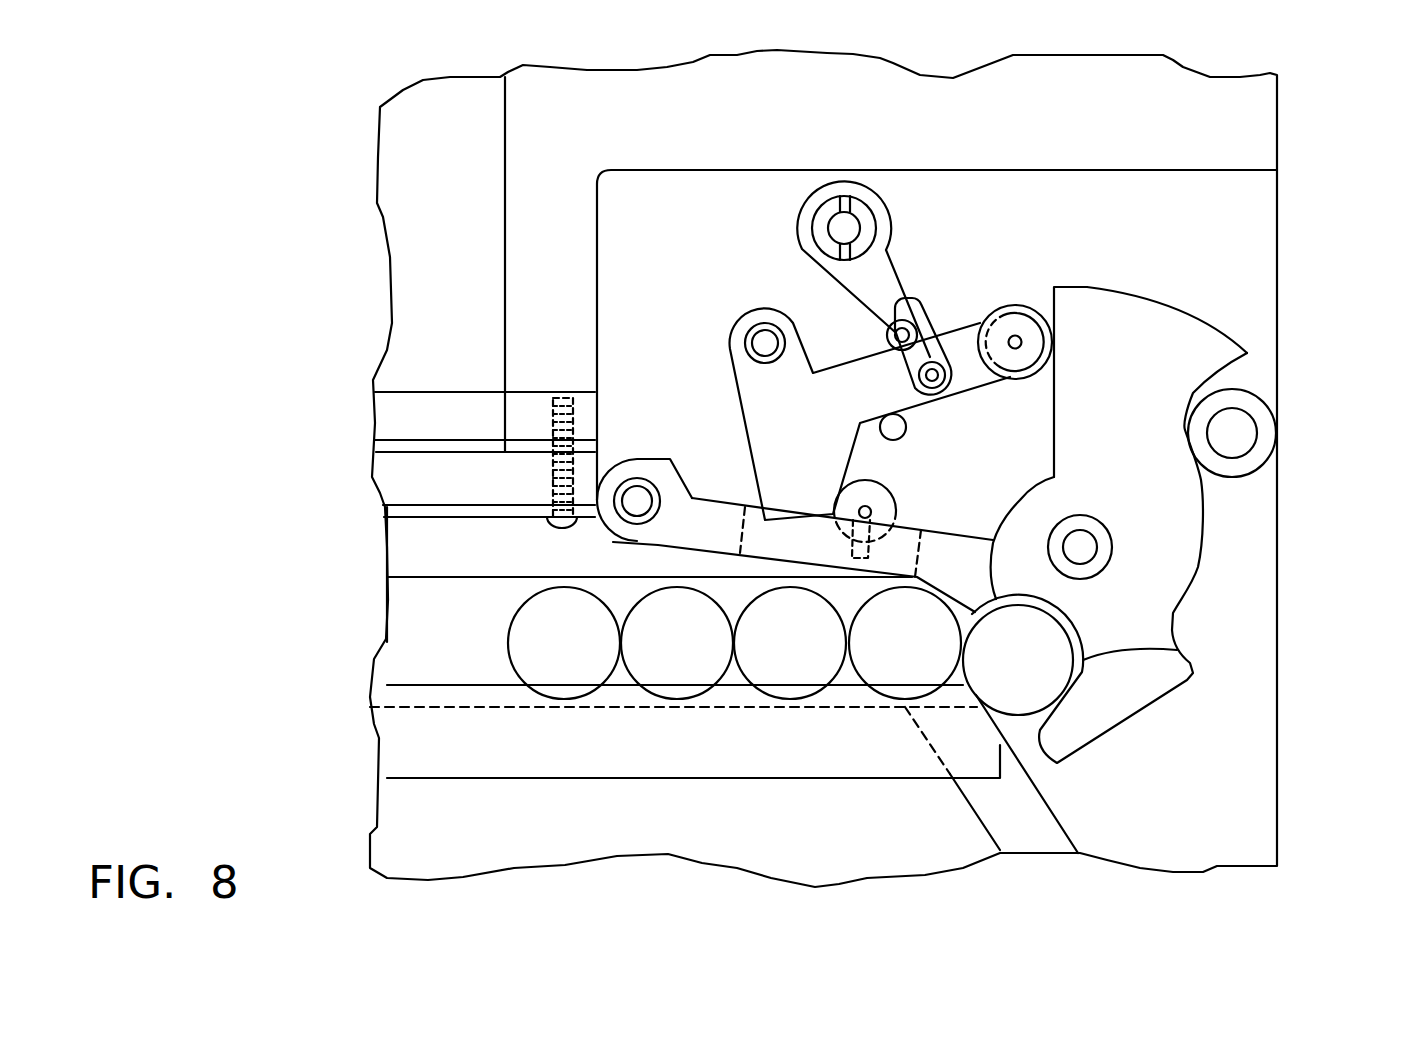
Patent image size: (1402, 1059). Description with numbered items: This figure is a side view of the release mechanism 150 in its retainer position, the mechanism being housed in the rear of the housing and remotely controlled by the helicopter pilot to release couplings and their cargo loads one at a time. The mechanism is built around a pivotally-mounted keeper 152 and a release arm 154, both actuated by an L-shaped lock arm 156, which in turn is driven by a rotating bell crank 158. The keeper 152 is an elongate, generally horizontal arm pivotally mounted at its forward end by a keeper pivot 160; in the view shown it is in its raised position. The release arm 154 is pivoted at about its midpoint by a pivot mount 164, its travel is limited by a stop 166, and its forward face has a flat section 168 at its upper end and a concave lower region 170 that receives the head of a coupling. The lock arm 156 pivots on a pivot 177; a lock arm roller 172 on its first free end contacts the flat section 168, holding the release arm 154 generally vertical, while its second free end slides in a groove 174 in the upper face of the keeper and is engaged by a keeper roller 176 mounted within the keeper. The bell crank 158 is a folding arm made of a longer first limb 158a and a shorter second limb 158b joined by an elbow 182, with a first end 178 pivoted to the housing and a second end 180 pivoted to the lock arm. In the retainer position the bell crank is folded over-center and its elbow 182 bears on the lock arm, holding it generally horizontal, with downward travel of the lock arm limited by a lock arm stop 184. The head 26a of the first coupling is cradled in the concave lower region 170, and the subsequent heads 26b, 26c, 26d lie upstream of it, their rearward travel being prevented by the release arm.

The release mechanism 150 is at (548, 231).
The keeper 152 is at (657, 546).
The release arm 154 is at (1172, 480).
The lock arm 156 is at (753, 393).
The bell crank 158 is at (861, 277).
The first limb 158a is at (887, 260).
The second limb 158b is at (967, 303).
The keeper pivot 160 is at (637, 503).
The pivot mount 164 is at (1085, 550).
The stop 166 is at (1233, 443).
The flat section 168 is at (1160, 308).
The lower region 170 is at (1177, 650).
The lock arm roller 172 is at (1023, 300).
The groove 174 is at (748, 525).
The keeper roller 176 is at (883, 502).
The pivot 177 is at (760, 341).
The first end 178 is at (808, 214).
The second end 180 is at (947, 373).
The elbow 182 is at (903, 300).
The lock arm stop 184 is at (900, 435).
The head 26a is at (1043, 676).
The head 26b is at (929, 654).
The head 26c is at (814, 654).
The head 26d is at (701, 654).